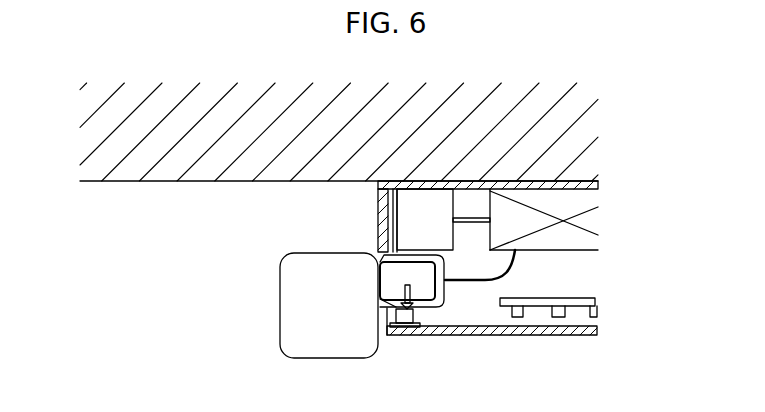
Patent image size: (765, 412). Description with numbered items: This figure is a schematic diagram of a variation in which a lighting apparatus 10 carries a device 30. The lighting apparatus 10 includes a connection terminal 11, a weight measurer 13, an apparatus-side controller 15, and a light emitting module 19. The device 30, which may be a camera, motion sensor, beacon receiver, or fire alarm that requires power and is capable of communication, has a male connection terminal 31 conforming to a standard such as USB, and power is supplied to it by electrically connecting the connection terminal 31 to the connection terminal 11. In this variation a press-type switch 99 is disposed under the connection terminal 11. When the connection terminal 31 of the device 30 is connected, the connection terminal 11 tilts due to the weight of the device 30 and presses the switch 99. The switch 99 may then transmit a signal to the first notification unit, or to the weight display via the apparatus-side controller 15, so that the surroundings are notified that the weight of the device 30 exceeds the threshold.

The lighting apparatus 10 is at (604, 180).
The weight measurer 13 is at (400, 203).
The apparatus-side controller 15 is at (565, 243).
The light emitting module 19 is at (594, 300).
The device 30 is at (344, 252).
The connection terminal 31 is at (390, 288).
The connection terminal 11 is at (380, 297).
The press-type switch 99 is at (409, 332).